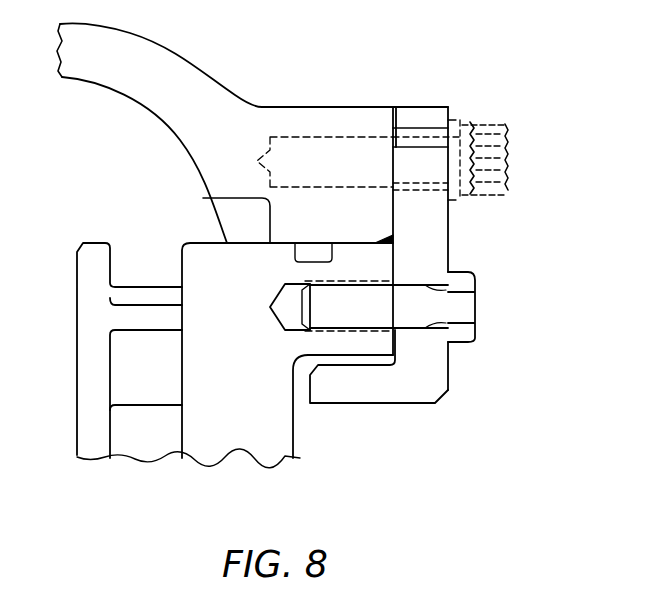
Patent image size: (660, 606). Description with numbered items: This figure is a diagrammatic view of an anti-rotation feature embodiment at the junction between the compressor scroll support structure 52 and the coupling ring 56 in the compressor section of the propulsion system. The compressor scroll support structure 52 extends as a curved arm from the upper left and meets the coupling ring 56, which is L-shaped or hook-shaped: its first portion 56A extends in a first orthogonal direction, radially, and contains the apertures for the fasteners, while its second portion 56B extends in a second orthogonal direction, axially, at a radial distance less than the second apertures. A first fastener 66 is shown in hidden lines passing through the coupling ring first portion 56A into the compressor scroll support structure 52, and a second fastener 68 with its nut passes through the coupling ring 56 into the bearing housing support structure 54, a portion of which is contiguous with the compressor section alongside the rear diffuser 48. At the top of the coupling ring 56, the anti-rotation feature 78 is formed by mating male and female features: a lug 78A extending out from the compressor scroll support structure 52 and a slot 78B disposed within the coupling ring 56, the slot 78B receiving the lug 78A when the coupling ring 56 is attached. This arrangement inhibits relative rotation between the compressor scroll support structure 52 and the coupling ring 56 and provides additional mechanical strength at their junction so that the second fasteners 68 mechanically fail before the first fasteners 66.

The rear diffuser 48 is at (148, 437).
The compressor scroll support structure 52 is at (211, 110).
The bearing housing support structure 54 is at (252, 432).
The coupling ring 56 is at (444, 279).
The coupling ring first portion 56A is at (425, 263).
The coupling ring second portion 56B is at (383, 387).
The first fastener 66 is at (510, 160).
The second fastener 68 is at (477, 310).
The anti-rotation feature 78 is at (462, 79).
The lug 78A is at (425, 121).
The slot 78B is at (436, 137).